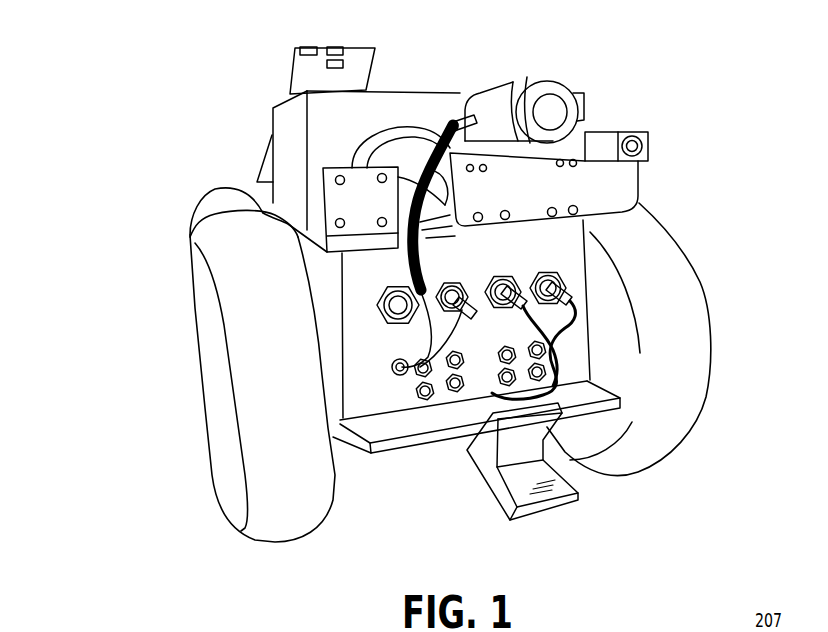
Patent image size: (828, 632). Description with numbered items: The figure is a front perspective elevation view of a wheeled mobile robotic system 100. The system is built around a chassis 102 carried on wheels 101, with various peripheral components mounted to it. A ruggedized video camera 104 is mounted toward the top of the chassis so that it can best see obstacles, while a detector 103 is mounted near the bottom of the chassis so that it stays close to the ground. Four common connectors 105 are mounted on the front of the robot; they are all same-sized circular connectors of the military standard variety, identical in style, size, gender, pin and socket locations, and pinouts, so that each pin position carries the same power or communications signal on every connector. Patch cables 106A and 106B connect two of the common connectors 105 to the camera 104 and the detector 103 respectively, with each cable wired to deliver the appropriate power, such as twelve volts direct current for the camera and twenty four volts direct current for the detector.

The mobile robotic system 100 is at (188, 74).
The wheels 101 is at (212, 473).
The chassis 102 is at (410, 443).
The detector 103 is at (547, 505).
The ruggedized video camera 104 is at (552, 82).
The common connectors 105 is at (463, 313).
The patch cable 106A is at (398, 200).
The patch cable 106B is at (545, 338).